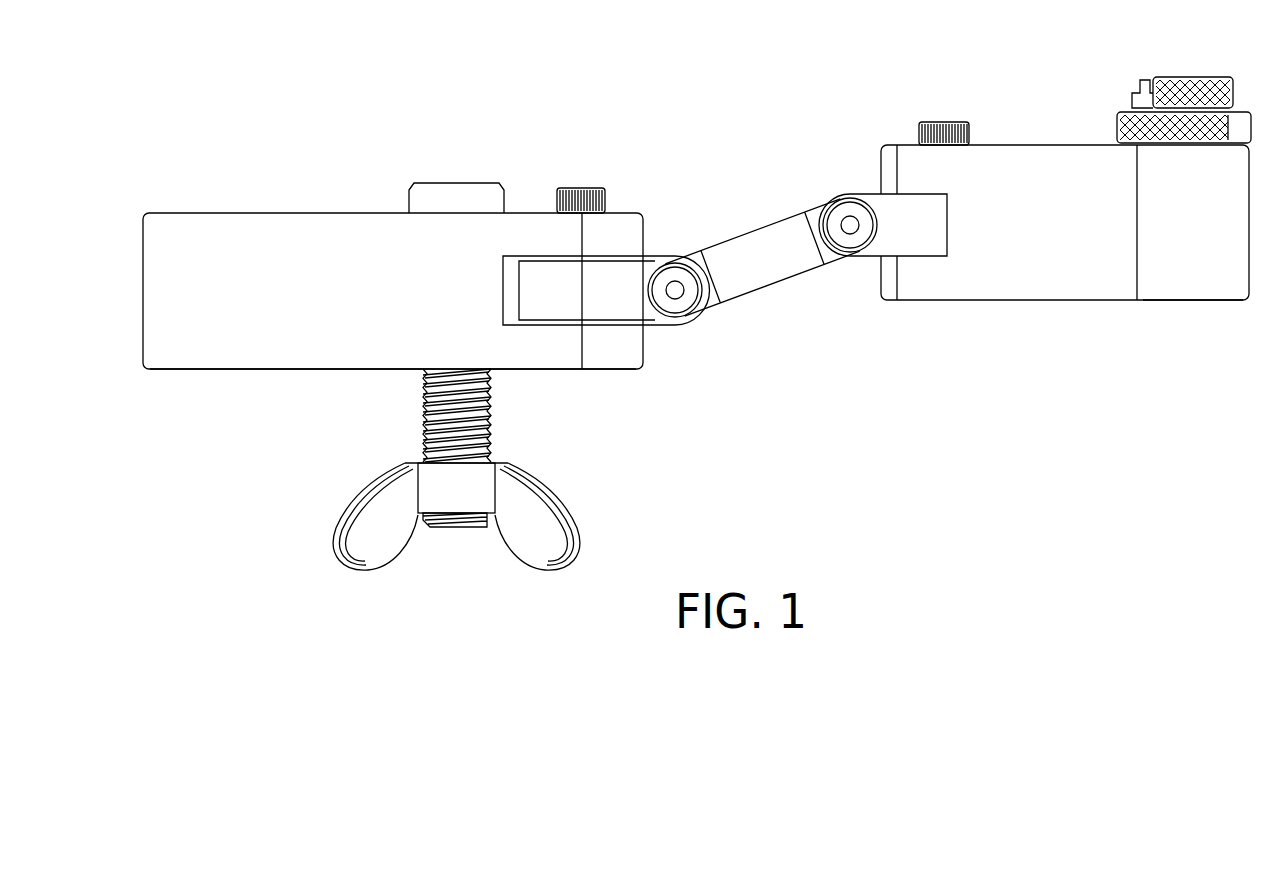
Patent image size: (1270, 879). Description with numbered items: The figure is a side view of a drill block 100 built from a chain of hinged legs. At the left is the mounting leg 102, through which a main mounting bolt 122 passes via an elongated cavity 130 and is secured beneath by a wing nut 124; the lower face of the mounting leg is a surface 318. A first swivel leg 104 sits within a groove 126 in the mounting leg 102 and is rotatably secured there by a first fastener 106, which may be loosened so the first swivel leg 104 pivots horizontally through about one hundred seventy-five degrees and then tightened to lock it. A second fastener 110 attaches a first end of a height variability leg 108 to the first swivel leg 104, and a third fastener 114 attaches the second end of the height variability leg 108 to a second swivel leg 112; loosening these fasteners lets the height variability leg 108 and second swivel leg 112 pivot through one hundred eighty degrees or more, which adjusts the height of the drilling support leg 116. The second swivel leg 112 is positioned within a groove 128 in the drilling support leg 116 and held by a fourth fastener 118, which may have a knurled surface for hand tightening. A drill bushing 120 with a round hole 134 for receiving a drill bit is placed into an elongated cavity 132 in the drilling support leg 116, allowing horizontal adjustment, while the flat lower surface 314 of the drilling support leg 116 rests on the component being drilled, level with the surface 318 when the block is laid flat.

The drill block 100 is at (228, 63).
The mounting leg 102 is at (248, 228).
The first swivel leg 104 is at (582, 305).
The first fastener 106 is at (582, 187).
The height variability leg 108 is at (755, 280).
The second fastener 110 is at (675, 302).
The second swivel leg 112 is at (900, 238).
The third fastener 114 is at (838, 211).
The drilling support leg 116 is at (1023, 287).
The fourth fastener 118 is at (943, 121).
The drill bushing 120 is at (1120, 110).
The main mounting bolt 122 is at (465, 182).
The wing nut 124 is at (572, 535).
The groove 126 is at (655, 245).
The groove 128 is at (870, 264).
The elongated cavity 130 is at (331, 173).
The elongated cavity 132 is at (1065, 122).
The round hole 134 is at (1193, 64).
The surface 314 is at (1175, 306).
The surface 318 is at (295, 376).